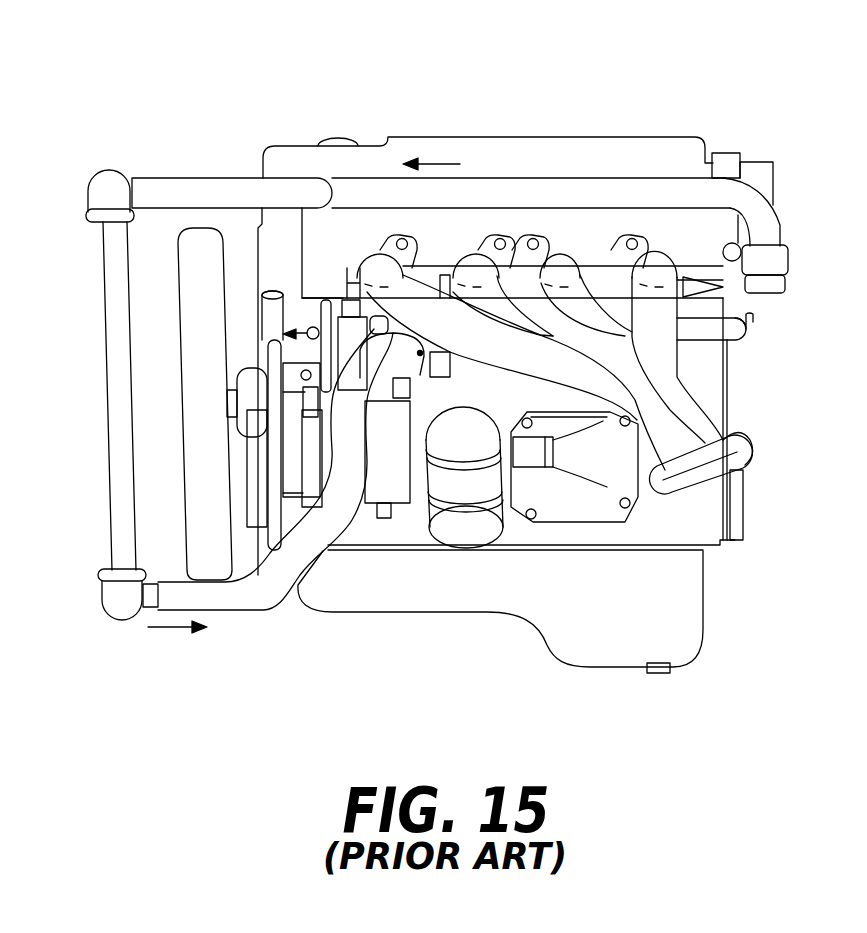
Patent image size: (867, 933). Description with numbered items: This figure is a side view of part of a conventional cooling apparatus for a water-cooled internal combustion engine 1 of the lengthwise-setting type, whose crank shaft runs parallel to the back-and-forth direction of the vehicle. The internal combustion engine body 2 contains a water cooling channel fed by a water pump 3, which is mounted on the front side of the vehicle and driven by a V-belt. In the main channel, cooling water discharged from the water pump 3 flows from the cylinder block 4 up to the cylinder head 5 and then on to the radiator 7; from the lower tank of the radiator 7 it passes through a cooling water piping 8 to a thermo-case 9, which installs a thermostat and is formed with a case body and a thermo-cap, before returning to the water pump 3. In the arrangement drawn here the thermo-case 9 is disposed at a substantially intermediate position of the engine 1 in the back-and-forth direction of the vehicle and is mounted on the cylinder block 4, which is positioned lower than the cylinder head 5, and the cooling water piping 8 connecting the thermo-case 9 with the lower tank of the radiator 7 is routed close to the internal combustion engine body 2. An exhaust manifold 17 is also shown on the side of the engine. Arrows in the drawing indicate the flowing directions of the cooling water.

The internal combustion engine 1 is at (730, 100).
The internal combustion engine body 2 is at (729, 370).
The water pump 3 is at (295, 355).
The cylinder block 4 is at (703, 391).
The cylinder head 5 is at (707, 227).
The radiator 7 is at (106, 489).
The cooling water piping 8 is at (253, 592).
The thermo-case 9 is at (400, 394).
The exhaust manifold 17 is at (729, 480).